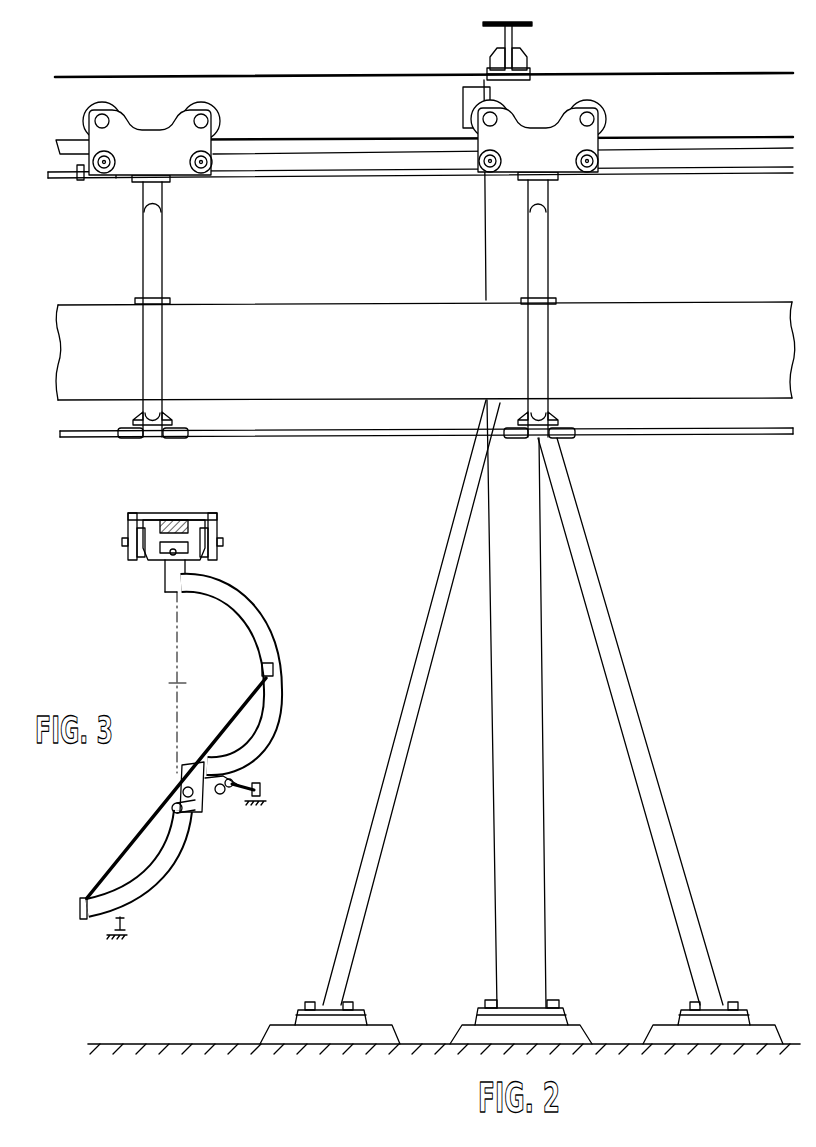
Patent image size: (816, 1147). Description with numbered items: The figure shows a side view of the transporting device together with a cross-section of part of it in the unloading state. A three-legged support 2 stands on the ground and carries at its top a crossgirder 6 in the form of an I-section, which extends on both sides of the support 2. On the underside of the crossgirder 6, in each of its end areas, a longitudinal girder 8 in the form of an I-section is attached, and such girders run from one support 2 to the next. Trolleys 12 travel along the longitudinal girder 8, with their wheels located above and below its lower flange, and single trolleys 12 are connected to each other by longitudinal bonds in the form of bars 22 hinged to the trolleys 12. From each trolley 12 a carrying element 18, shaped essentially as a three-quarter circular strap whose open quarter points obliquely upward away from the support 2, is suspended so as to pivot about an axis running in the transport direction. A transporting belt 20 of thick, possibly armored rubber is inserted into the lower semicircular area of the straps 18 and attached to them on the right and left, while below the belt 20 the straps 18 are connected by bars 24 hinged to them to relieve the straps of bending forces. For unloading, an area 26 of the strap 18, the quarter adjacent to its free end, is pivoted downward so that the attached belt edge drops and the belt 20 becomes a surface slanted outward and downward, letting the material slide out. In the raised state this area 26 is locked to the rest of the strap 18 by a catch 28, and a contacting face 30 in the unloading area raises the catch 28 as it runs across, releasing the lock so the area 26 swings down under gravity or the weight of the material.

In FIG. 2, the three-legged support 2 is at (650, 700).
In FIG. 2, the crossgirder 6 is at (512, 34).
In FIG. 2, the longitudinal girder 8 is at (317, 100).
In FIG. 2, the trolley 12 is at (159, 119).
In FIG. 3, the trolley 12 is at (139, 563).
In FIG. 2, the carrying element (strap) 18 is at (540, 273).
In FIG. 3, the carrying element (strap) 18 is at (262, 628).
In FIG. 2, the transporting belt 20 is at (366, 325).
In FIG. 3, the transporting belt 20 is at (227, 725).
In FIG. 2, the bar (longitudinal bond between trolleys) 22 is at (347, 178).
In FIG. 2, the bar (longitudinal bond between straps) 24 is at (367, 438).
In FIG. 3, the pivoted area of strap 26 is at (160, 882).
In FIG. 3, the catch 28 is at (235, 795).
In FIG. 3, the contacting face 30 is at (254, 803).